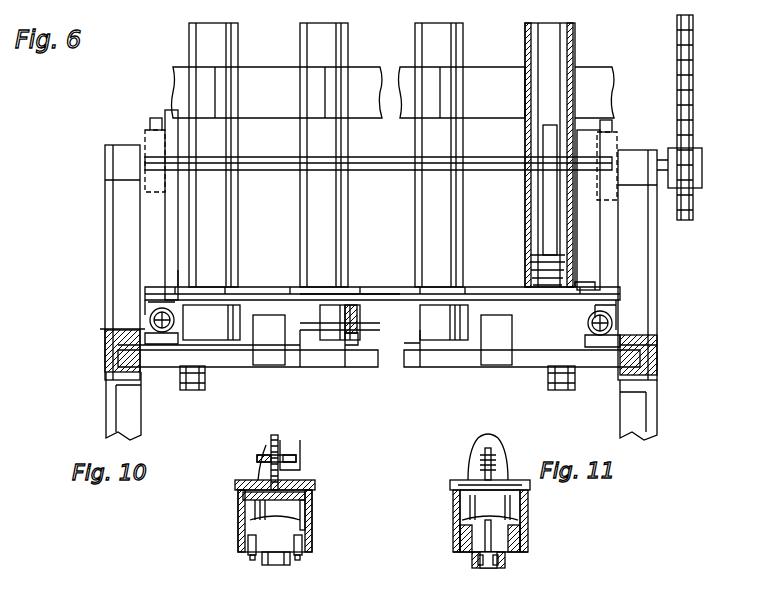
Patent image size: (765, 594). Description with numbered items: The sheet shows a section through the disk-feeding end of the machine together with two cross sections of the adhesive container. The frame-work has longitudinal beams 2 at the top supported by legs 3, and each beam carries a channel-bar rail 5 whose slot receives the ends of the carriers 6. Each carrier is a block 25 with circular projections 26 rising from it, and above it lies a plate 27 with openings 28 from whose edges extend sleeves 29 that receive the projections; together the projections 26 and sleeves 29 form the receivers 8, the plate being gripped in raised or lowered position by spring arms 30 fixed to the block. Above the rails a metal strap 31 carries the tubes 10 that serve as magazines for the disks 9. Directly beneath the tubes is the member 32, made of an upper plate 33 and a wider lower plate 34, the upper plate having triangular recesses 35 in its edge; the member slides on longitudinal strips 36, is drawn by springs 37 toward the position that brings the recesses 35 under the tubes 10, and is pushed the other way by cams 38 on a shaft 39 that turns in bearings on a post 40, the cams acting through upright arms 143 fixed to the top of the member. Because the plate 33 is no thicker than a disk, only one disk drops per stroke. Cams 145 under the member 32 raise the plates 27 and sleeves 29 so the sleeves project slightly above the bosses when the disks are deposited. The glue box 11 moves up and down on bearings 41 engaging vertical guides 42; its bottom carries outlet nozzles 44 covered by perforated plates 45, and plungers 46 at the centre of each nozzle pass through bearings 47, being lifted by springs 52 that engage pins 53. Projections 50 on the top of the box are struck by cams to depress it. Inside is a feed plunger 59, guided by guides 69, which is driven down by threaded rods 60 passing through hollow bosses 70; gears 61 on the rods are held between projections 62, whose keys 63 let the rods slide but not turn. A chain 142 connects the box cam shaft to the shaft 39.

In FIG. 6, the longitudinal beam 2 is at (125, 381).
In FIG. 6, the leg 3 is at (126, 418).
In FIG. 6, the rail 5 is at (659, 358).
In FIG. 6, the carrier 6 is at (442, 368).
In FIG. 6, the receiver 8 is at (352, 315).
In FIG. 6, the disk 9 is at (533, 262).
In FIG. 6, the tube 10 is at (410, 236).
In FIG. 10, the glue box 11 is at (238, 515).
In FIG. 11, the glue box 11 is at (490, 516).
In FIG. 6, the block 25 is at (247, 368).
In FIG. 6, the projection 26 is at (342, 368).
In FIG. 6, the plate 27 is at (530, 368).
In FIG. 6, the opening 28 is at (352, 345).
In FIG. 6, the sleeve 29 is at (211, 322).
In FIG. 6, the spring arm 30 is at (382, 340).
In FIG. 6, the strap 31 is at (393, 92).
In FIG. 6, the member 32 is at (350, 280).
In FIG. 6, the plate 33 is at (268, 285).
In FIG. 6, the plate 34 is at (392, 326).
In FIG. 6, the recess 35 is at (186, 284).
In FIG. 6, the longitudinal strip 36 is at (143, 305).
In FIG. 6, the spring 37 is at (106, 328).
In FIG. 6, the cam 38 is at (153, 123).
In FIG. 6, the shaft 39 is at (271, 172).
In FIG. 6, the post 40 is at (663, 243).
In FIG. 10, the bearing 41 is at (248, 548).
In FIG. 10, the vertical guide 42 is at (250, 558).
In FIG. 10, the outlet nozzle 44 is at (276, 565).
In FIG. 11, the outlet nozzle 44 is at (472, 555).
In FIG. 11, the perforated plate 45 is at (498, 566).
In FIG. 11, the plunger 46 is at (492, 532).
In FIG. 11, the bearing 47 is at (478, 565).
In FIG. 10, the projection 50 is at (270, 455).
In FIG. 11, the projection 50 is at (500, 452).
In FIG. 11, the spring 52 is at (476, 466).
In FIG. 11, the pin 53 is at (484, 455).
In FIG. 10, the feed plunger 59 is at (313, 496).
In FIG. 10, the threaded rod 60 is at (274, 436).
In FIG. 10, the gear 61 is at (258, 458).
In FIG. 10, the projection 62 is at (300, 465).
In FIG. 10, the key 63 is at (285, 450).
In FIG. 10, the guide 69 is at (238, 521).
In FIG. 10, the hollow boss 70 is at (288, 483).
In FIG. 11, the hollow boss 70 is at (510, 478).
In FIG. 6, the chain 142 is at (694, 92).
In FIG. 6, the upright arm 143 is at (157, 214).
In FIG. 6, the cam 145 is at (382, 328).